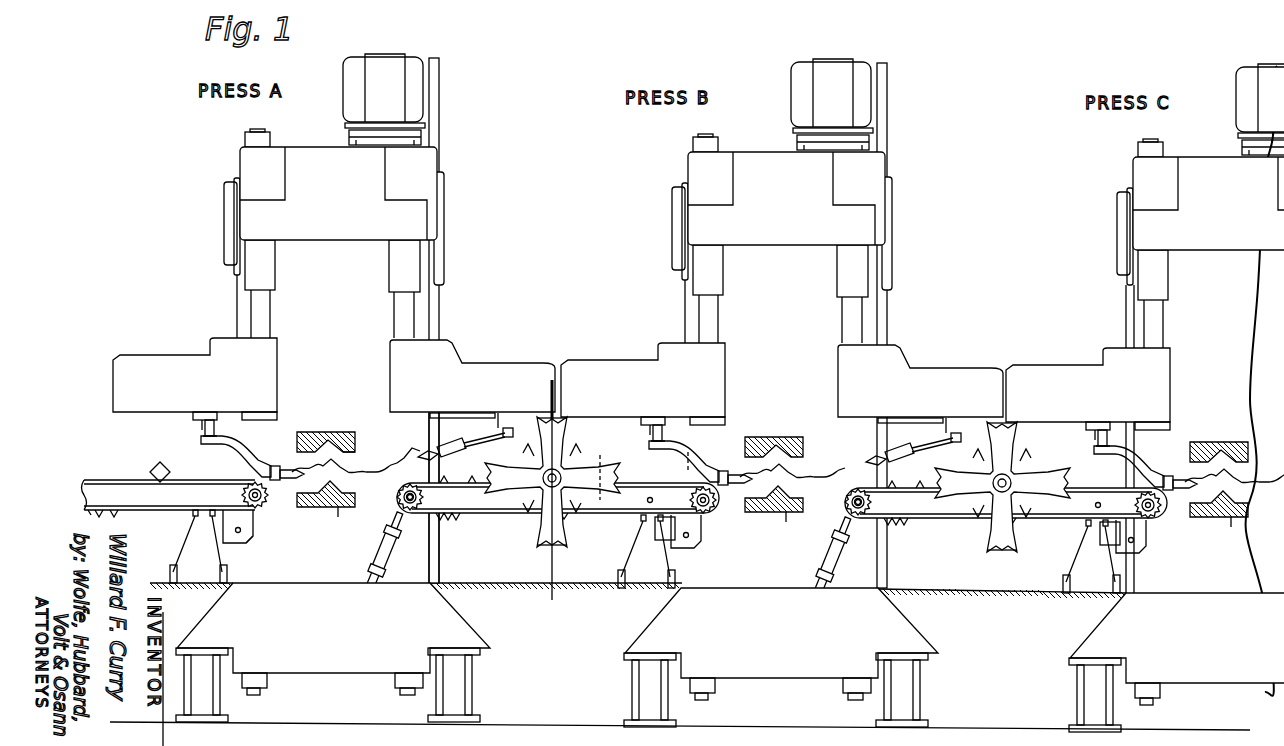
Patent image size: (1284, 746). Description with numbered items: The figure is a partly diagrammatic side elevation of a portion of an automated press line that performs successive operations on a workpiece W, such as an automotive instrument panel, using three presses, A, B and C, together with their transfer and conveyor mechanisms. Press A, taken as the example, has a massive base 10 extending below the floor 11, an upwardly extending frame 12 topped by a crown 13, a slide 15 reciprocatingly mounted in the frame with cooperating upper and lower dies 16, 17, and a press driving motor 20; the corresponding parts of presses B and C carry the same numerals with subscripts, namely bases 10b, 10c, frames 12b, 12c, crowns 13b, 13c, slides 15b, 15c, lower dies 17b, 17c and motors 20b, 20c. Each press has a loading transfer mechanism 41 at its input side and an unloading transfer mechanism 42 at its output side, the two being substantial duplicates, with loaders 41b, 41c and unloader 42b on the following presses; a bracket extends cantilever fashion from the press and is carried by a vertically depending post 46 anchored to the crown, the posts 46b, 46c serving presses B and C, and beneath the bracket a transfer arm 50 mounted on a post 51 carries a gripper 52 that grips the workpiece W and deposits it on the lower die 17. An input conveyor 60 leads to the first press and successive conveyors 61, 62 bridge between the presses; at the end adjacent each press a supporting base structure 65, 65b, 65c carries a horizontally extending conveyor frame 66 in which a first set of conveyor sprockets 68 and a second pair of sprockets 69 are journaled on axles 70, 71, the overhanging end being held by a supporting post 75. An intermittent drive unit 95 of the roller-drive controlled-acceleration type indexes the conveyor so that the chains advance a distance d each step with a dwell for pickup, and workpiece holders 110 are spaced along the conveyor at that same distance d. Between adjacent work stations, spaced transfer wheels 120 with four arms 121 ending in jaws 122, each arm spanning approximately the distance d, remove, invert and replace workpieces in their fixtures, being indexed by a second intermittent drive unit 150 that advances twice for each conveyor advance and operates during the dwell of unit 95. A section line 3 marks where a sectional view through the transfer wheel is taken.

The base 10 is at (470, 630).
The base 10b is at (645, 636).
The base 10c is at (1095, 640).
The floor 11 is at (480, 580).
The frame 12 is at (430, 308).
The frame 12b is at (878, 313).
The frame 12c is at (1127, 312).
The crown 13 is at (245, 162).
The crown 13b is at (692, 166).
The crown 13c is at (1140, 173).
The slide 15 is at (350, 430).
The slide 15b is at (790, 437).
The slide 15c is at (1235, 442).
The upper die 16 is at (348, 447).
The lower die 17 is at (338, 508).
The lower die 17b is at (752, 512).
The lower die 17c is at (1236, 520).
The press driving motor 20 is at (400, 62).
The press driving motor 20b is at (846, 66).
The press driving motor 20c is at (1258, 70).
The loading transfer mechanism 41 is at (176, 354).
The loading transfer mechanism 41b is at (626, 360).
The loading transfer mechanism 41c is at (1088, 389).
The unloading transfer mechanism 42 is at (499, 360).
The unloading transfer mechanism 42b is at (942, 370).
The post 46 is at (268, 312).
The post 46b is at (716, 318).
The post 46c is at (1162, 328).
The transfer arm 50 is at (240, 450).
The post 51 is at (205, 436).
The gripper 52 is at (288, 469).
The input conveyor 60 is at (95, 479).
The conveyor 61 is at (490, 508).
The conveyor 62 is at (950, 520).
The supporting base structure 65 is at (190, 520).
The supporting base structure 65b is at (660, 560).
The supporting base structure 65c is at (1108, 568).
The conveyor frame 66 is at (114, 478).
The conveyor sprockets 68 is at (254, 520).
The conveyor sprockets 69 is at (400, 504).
The axle 70 is at (247, 487).
The axle 71 is at (400, 497).
The supporting post 75 is at (370, 575).
The intermittent drive unit 95 is at (254, 539).
The workpiece holders 110 is at (152, 478).
The transfer wheels 120 is at (570, 452).
The arms 121 is at (540, 428).
The jaws 122 is at (542, 524).
The intermittent drive unit 150 is at (628, 530).
The section line 3- 3 is at (592, 393).
The distance d is at (688, 463).
The workpiece W is at (788, 468).